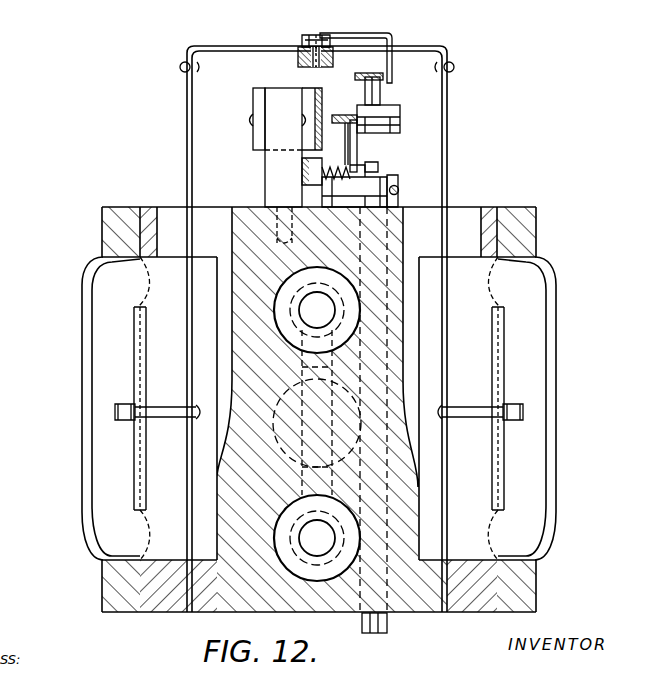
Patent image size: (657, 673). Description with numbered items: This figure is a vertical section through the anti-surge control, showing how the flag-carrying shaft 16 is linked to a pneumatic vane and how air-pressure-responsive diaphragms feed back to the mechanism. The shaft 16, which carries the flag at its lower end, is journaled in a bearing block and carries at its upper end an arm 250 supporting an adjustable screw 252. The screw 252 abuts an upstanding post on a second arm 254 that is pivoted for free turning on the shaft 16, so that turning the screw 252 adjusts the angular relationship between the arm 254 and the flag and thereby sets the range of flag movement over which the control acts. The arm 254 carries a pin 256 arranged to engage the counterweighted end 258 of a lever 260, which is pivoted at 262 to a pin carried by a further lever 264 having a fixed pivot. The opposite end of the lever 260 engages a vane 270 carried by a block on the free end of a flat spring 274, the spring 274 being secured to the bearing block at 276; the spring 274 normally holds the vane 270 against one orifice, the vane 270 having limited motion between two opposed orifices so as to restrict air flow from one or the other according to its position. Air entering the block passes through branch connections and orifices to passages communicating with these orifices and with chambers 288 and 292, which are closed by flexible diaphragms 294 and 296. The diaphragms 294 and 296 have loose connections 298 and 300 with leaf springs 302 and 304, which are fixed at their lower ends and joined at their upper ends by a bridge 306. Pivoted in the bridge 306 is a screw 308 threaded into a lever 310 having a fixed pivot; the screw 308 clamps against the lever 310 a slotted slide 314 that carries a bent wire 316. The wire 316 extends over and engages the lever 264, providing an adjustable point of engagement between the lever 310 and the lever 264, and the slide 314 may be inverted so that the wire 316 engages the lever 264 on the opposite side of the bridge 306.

The shaft 16 is at (388, 625).
The arm 250 is at (322, 192).
The adjustable screw 252 is at (379, 170).
The arm 254 is at (399, 192).
The pin 256 is at (358, 148).
The counterweighted end 258 is at (400, 128).
The lever 260 is at (338, 115).
The pivot 262 is at (381, 100).
The lever 264 is at (384, 75).
The vane 270 is at (303, 63).
The flat spring 274 is at (262, 102).
The securing point 276 is at (268, 168).
The chamber 288 is at (105, 328).
The chamber 292 is at (532, 328).
The flexible diaphragm 294 is at (140, 378).
The flexible diaphragm 296 is at (500, 378).
The loose connection 298 is at (160, 420).
The loose connection 300 is at (467, 420).
The leaf spring 302 is at (186, 140).
The leaf spring 304 is at (448, 160).
The bridge 306 is at (238, 46).
The screw 308 is at (312, 36).
The lever 310 is at (298, 60).
The slide 314 is at (336, 58).
The bent wire 316 is at (392, 44).